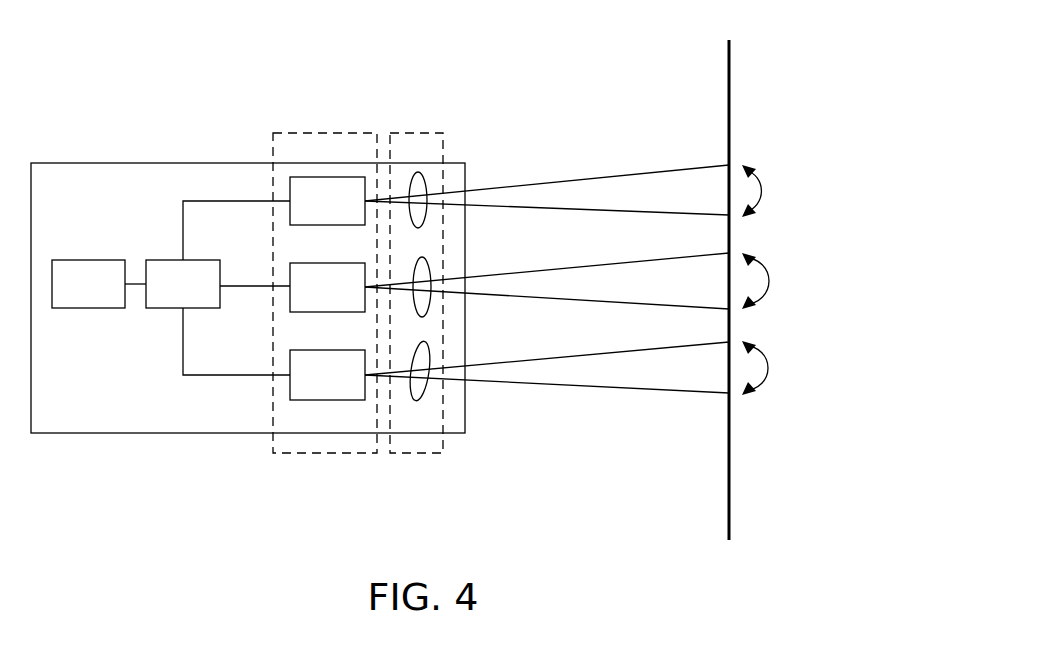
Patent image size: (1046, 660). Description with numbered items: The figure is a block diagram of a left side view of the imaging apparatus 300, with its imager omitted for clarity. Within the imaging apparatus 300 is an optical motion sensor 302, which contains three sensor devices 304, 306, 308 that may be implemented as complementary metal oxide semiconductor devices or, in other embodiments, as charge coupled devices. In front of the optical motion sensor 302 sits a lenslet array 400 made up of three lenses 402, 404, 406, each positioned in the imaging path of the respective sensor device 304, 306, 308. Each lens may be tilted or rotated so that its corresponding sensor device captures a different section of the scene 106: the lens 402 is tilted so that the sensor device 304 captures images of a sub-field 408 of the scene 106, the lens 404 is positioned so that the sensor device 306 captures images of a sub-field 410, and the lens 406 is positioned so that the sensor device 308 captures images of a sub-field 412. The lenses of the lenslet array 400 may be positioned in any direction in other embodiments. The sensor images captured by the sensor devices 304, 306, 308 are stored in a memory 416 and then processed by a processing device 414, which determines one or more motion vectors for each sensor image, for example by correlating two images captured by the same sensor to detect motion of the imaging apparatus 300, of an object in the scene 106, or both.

The scene 106 is at (742, 82).
The imaging apparatus 300 is at (94, 402).
The optical motion sensor 302 is at (332, 122).
The sensor device 304 is at (308, 213).
The sensor device 306 is at (308, 300).
The sensor device 308 is at (308, 387).
The lenslet array 400 is at (417, 122).
The lens 402 is at (430, 175).
The lens 404 is at (440, 306).
The lens 406 is at (436, 397).
The sub-field 408 is at (782, 192).
The sub-field 410 is at (782, 280).
The sub-field 412 is at (782, 368).
The processing device 414 is at (164, 296).
The memory 416 is at (69, 296).